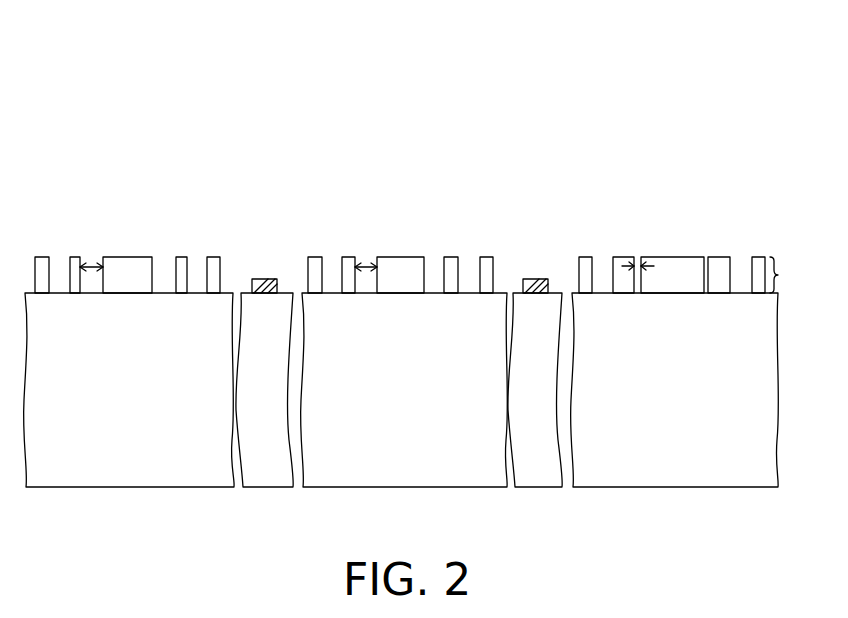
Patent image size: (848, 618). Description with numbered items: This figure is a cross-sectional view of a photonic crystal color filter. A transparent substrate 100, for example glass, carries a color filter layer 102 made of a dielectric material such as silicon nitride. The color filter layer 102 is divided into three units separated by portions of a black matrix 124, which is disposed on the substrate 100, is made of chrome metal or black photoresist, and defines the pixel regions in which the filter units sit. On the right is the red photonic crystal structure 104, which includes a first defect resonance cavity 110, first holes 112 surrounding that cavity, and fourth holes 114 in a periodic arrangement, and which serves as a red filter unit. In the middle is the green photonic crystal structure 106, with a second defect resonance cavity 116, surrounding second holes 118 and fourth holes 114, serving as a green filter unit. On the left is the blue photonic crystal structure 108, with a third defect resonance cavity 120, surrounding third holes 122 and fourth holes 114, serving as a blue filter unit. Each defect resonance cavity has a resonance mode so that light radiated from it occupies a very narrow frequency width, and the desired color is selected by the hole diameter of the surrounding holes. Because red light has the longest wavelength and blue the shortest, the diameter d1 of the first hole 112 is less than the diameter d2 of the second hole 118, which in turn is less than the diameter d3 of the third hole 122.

The substrate 100 is at (763, 472).
The color filter layer 102 is at (793, 275).
The red photonic crystal structure 104 is at (665, 132).
The green photonic crystal structure 106 is at (390, 132).
The blue photonic crystal structure 108 is at (137, 132).
The first defect resonance cavity 110 is at (668, 265).
The first hole 112 is at (706, 255).
The fourth hole 114 is at (195, 270).
The second defect resonance cavity 116 is at (405, 267).
The second hole 118 is at (435, 270).
The third defect resonance cavity 120 is at (128, 267).
The third hole 122 is at (163, 270).
The black matrix 124 is at (265, 279).
The diameter of the first hole d1 is at (637, 265).
The diameter of the second hole d2 is at (365, 265).
The diameter of the third hole d3 is at (90, 265).